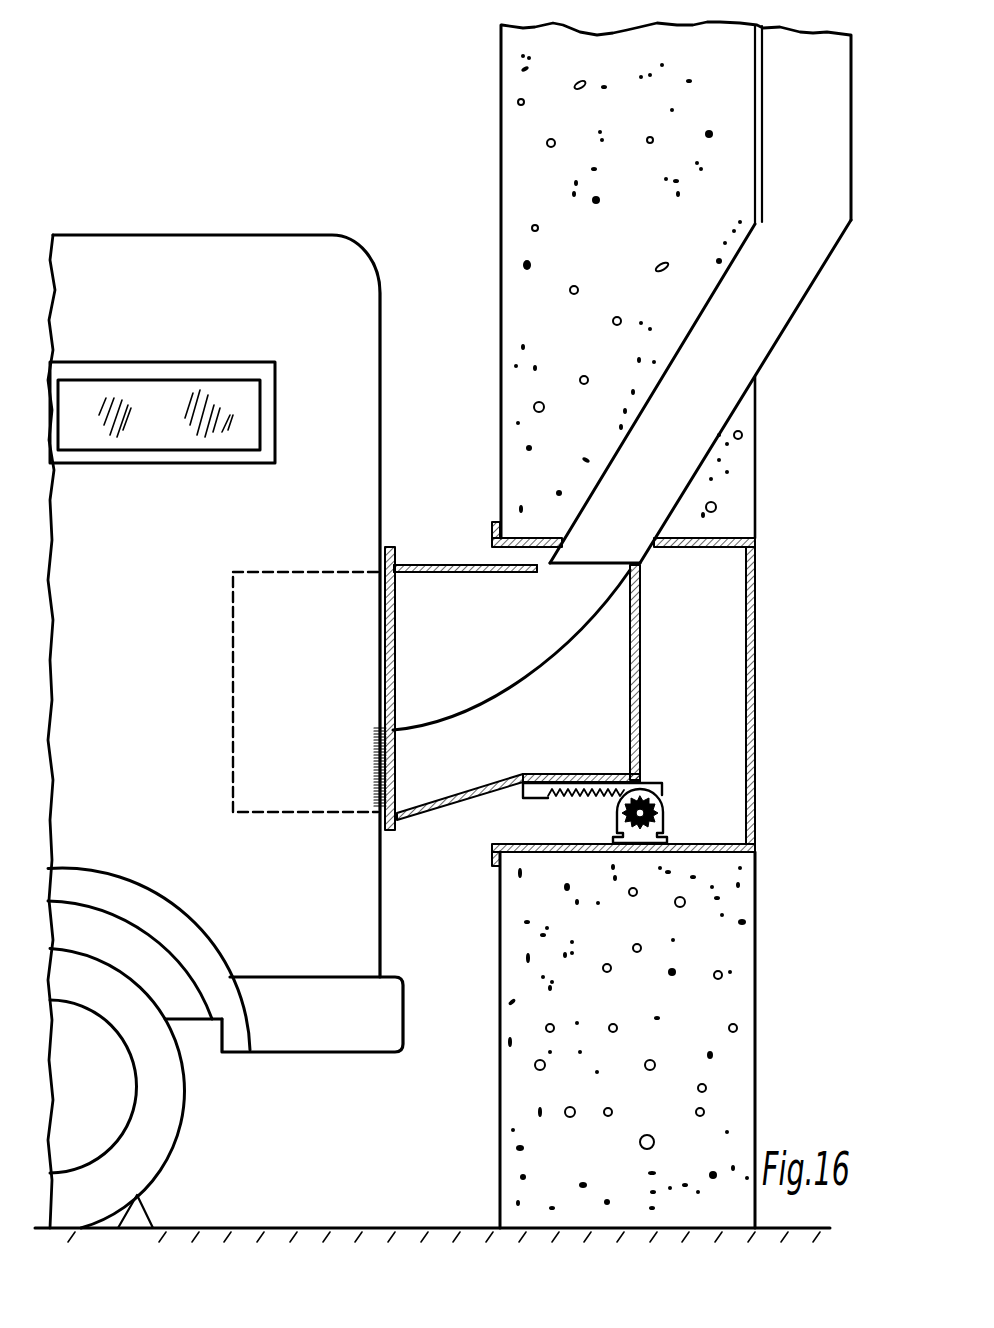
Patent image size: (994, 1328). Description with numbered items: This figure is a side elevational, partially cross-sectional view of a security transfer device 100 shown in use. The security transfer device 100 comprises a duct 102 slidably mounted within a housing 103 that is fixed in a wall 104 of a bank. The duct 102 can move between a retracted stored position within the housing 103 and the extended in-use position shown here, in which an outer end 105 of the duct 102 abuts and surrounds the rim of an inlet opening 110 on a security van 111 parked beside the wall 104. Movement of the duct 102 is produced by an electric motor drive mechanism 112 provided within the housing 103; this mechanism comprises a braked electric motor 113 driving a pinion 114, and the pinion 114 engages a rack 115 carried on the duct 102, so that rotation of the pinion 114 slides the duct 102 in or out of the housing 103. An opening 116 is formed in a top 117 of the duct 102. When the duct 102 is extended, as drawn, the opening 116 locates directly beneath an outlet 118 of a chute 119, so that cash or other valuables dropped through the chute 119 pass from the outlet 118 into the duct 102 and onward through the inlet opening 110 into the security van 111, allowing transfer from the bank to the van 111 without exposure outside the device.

The security transfer device 100 is at (800, 640).
The duct 102 is at (640, 722).
The housing 103 is at (756, 758).
The wall 104 is at (518, 200).
The outer end 105 is at (398, 583).
The inlet opening 110 is at (373, 583).
The security van 111 is at (358, 340).
The electric motor drive mechanism 112 is at (722, 808).
The braked electric motor 113 is at (663, 815).
The pinion 114 is at (645, 823).
The rack 115 is at (555, 798).
The opening 116 is at (583, 577).
The top 117 is at (458, 576).
The outlet 118 is at (630, 517).
The chute 119 is at (772, 340).